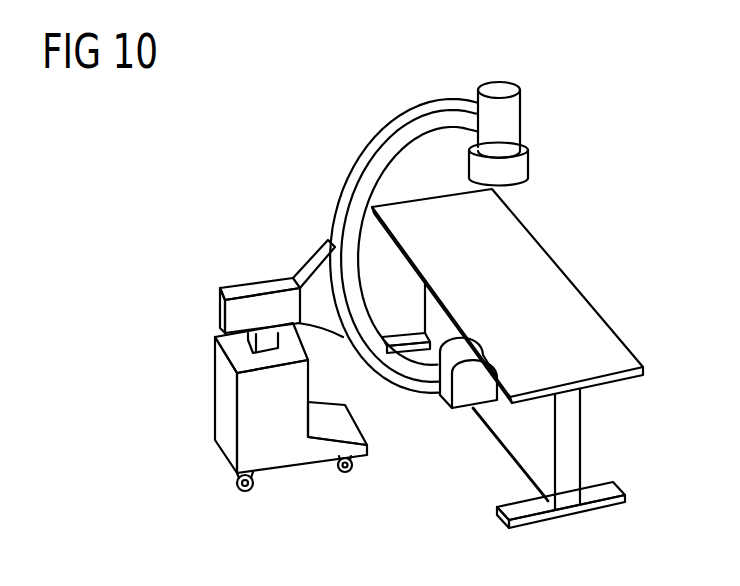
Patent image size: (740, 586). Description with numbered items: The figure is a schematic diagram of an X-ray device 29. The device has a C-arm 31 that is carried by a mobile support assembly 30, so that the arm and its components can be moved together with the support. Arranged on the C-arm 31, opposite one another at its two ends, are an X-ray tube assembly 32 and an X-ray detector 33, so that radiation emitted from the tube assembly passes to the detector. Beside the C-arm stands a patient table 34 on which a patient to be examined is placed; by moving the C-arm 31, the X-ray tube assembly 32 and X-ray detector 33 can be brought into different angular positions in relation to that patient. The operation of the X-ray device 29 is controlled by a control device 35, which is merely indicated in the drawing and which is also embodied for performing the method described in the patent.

The X-ray device 29 is at (285, 124).
The mobile support assembly 30 is at (223, 403).
The C-arm 31 is at (387, 144).
The X-ray tube assembly 32 is at (463, 397).
The X-ray detector 33 is at (521, 168).
The patient table 34 is at (593, 333).
The control device 35 is at (278, 455).